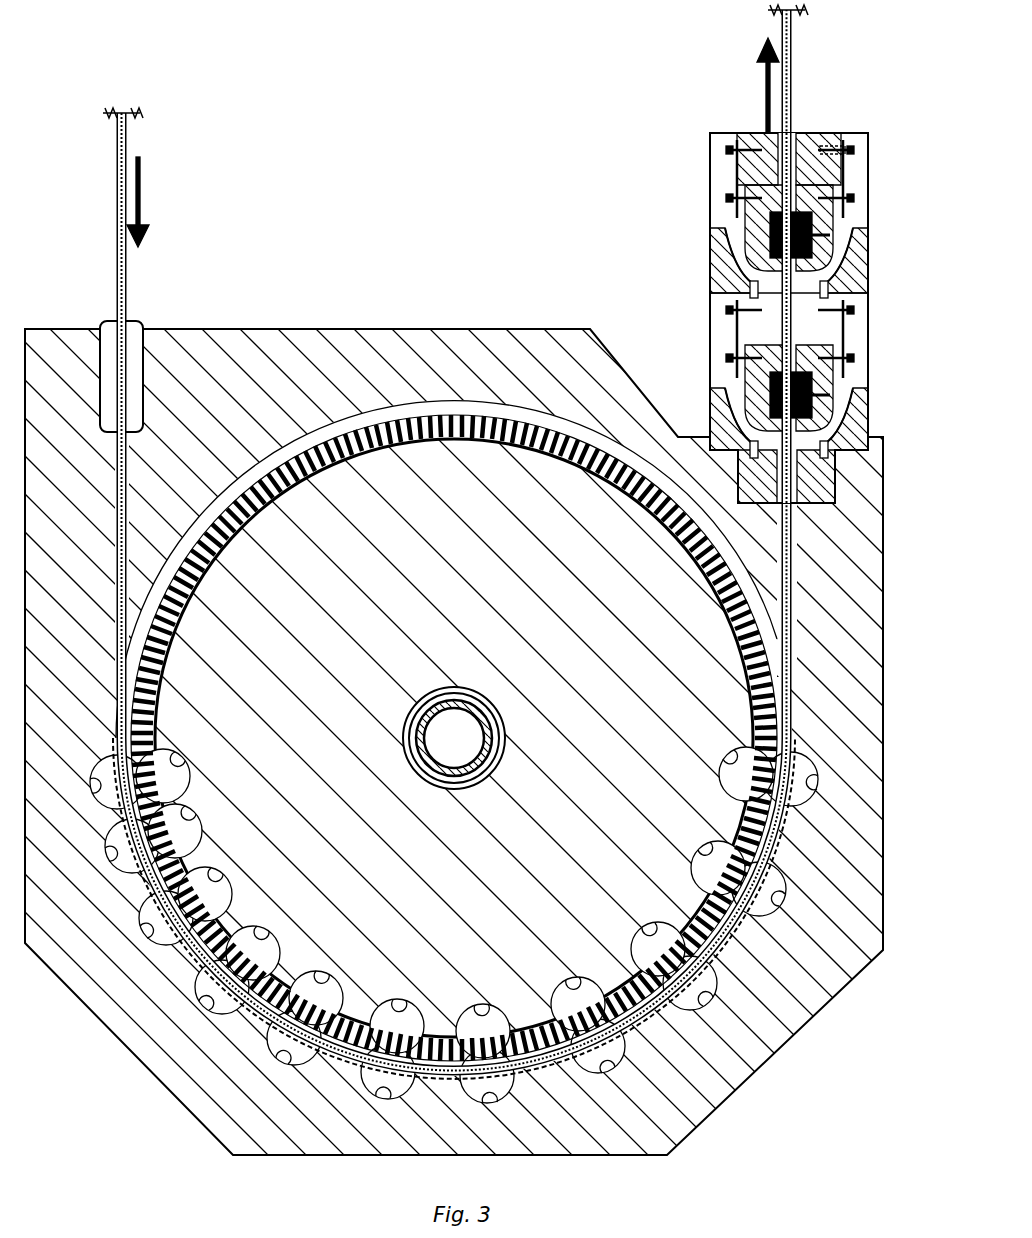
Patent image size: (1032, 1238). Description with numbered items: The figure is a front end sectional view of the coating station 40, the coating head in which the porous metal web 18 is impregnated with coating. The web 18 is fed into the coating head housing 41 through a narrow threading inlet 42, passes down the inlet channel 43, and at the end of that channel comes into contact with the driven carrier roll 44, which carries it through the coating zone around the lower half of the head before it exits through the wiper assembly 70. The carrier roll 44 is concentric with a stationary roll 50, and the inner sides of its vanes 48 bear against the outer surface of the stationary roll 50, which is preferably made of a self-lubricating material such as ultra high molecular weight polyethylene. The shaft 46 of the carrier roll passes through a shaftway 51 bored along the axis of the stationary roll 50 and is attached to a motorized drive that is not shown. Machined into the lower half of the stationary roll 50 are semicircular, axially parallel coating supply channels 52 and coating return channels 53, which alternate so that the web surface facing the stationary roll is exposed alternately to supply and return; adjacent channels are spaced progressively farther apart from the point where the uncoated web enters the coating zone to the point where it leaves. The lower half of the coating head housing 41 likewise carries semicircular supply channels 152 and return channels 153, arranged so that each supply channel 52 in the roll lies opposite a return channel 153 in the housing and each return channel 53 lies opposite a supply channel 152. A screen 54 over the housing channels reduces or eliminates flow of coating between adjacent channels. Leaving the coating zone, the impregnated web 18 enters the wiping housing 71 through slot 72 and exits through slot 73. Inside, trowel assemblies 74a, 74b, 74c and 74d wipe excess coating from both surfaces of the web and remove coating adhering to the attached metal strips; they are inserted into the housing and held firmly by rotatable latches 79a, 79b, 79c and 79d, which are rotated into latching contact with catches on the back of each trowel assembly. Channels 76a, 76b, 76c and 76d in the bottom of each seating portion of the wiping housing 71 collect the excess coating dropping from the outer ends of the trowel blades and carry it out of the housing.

The porous metal web 18 is at (117, 202).
The coating station 40 is at (364, 226).
The coating head housing 41 is at (263, 330).
The narrow threading inlet 42 is at (141, 325).
The inlet channel 43 is at (116, 535).
The driven carrier roll 44 is at (350, 414).
The shaft 46 is at (423, 750).
The vanes 48 is at (582, 437).
The stationary roll 50 is at (362, 615).
The shaftway 51 is at (460, 690).
The coating supply channels 52 is at (186, 768).
The coating return channels 53 is at (202, 826).
The screen 54 is at (708, 972).
The wiper assembly 70 is at (620, 192).
The wiping housing 71 is at (868, 418).
The slot 72 is at (805, 508).
The slot 73 is at (800, 130).
The trowel assembly 74a is at (755, 225).
The trowel assembly 74b is at (828, 226).
The trowel assembly 74c is at (755, 388).
The trowel assembly 74d is at (828, 388).
The channel 76a is at (748, 285).
The channel 76b is at (830, 286).
The channel 76c is at (752, 428).
The channel 76d is at (832, 442).
The rotatable latch 79a is at (737, 175).
The rotatable latch 79b is at (843, 175).
The rotatable latch 79c is at (737, 340).
The rotatable latch 79d is at (843, 338).
The coating supply channels 152 is at (105, 850).
The coating return channels 153 is at (90, 782).